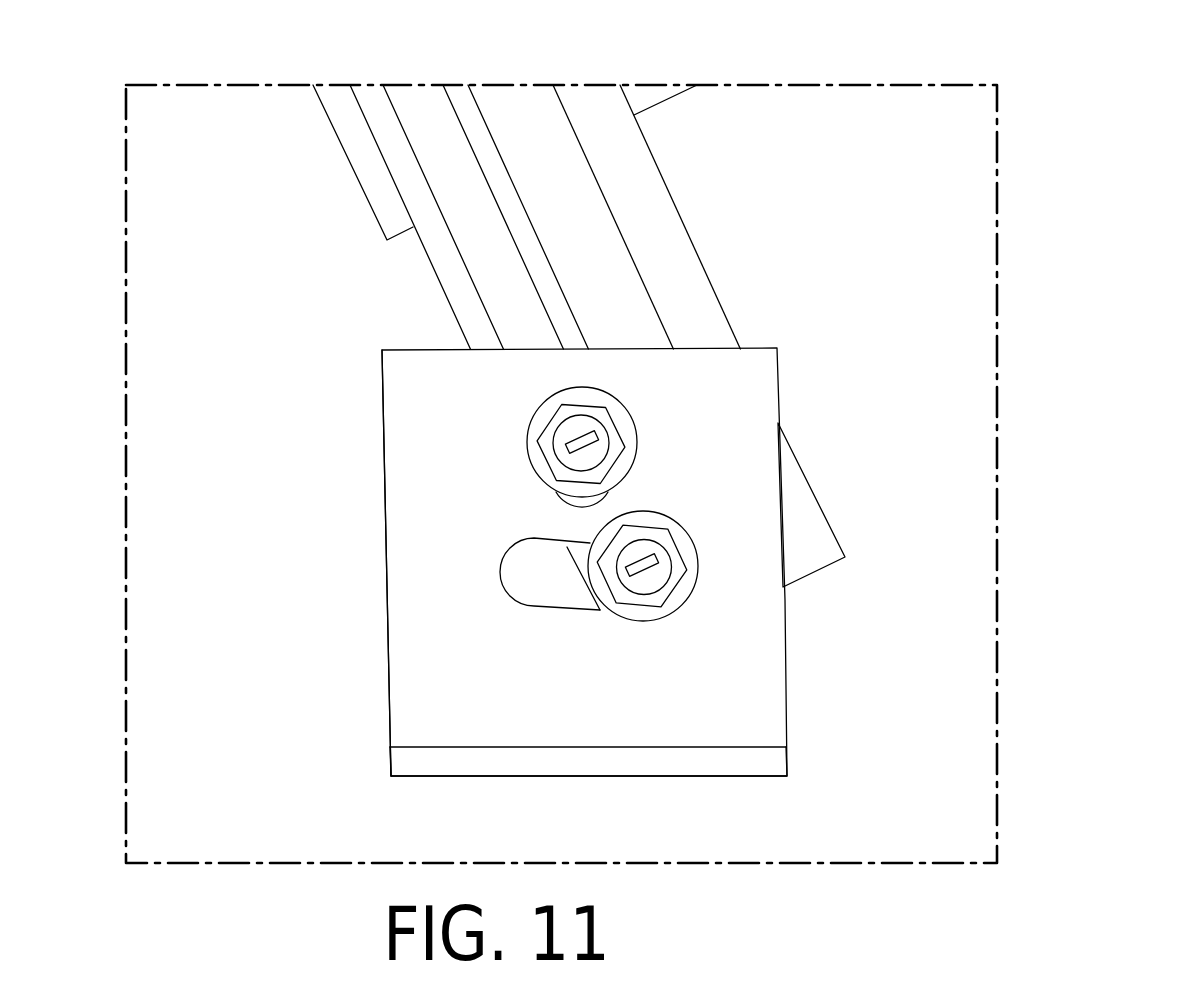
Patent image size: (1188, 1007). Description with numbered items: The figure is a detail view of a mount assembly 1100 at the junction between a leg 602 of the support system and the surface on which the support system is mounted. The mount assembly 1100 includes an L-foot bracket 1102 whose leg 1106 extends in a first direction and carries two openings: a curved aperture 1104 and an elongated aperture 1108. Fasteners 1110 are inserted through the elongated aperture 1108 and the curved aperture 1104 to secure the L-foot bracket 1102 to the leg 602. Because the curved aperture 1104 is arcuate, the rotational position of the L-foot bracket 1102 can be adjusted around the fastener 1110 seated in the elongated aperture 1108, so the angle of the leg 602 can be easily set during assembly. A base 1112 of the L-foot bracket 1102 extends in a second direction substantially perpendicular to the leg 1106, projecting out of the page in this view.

The mount assembly 1100 is at (1072, 76).
The leg 602 is at (665, 207).
The L-foot bracket 1102 is at (800, 672).
The curved aperture 1104 is at (447, 599).
The leg 1106 is at (317, 563).
The elongated aperture 1108 is at (451, 492).
The fasteners 1110 is at (466, 423).
The base 1112 is at (553, 783).